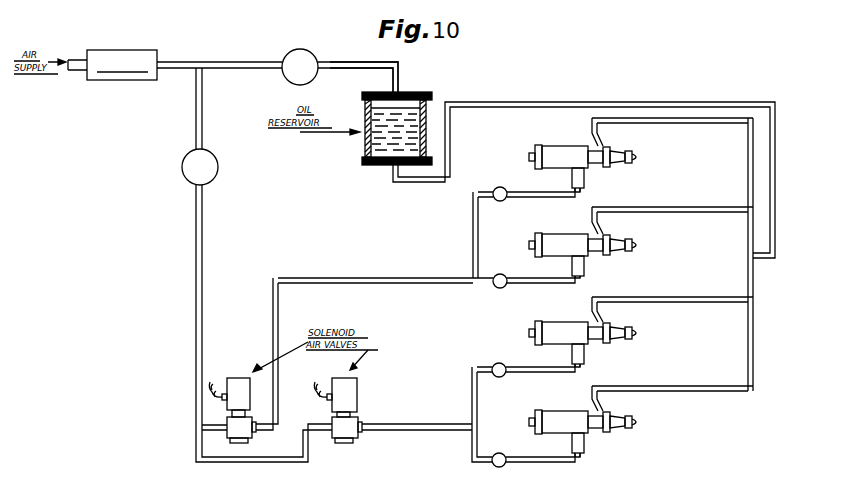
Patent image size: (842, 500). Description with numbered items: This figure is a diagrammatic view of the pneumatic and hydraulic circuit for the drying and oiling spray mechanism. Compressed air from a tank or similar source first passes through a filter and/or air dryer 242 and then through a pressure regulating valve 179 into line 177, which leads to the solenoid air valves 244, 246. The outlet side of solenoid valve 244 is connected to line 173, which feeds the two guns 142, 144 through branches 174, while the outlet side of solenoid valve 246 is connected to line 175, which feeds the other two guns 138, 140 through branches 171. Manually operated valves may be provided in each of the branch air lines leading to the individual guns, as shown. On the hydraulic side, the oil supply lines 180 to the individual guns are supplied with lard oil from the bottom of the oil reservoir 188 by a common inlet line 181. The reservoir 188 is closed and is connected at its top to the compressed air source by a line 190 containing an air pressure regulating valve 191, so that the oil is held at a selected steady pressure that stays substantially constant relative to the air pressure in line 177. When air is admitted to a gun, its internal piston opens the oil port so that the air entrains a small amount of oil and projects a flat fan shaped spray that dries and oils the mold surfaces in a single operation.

The filter and/or air dryer 242 is at (145, 51).
The air pressure regulating valve 191 is at (312, 53).
The conduit 190 is at (375, 64).
The oil reservoir 188 is at (408, 105).
The common inlet line 181 is at (633, 104).
The oil supply lines 180 is at (697, 120).
The spray gun 144 is at (562, 152).
The spray gun 142 is at (572, 243).
The spray gun 140 is at (575, 332).
The spray gun 138 is at (574, 420).
The branches 174 is at (503, 202).
The line 173 is at (386, 279).
The pressure regulating valve 179 is at (218, 167).
The line 177 is at (203, 240).
The branches 171 is at (502, 378).
The line 175 is at (388, 425).
The solenoid air valve 244 is at (238, 380).
The solenoid air valve 246 is at (357, 388).